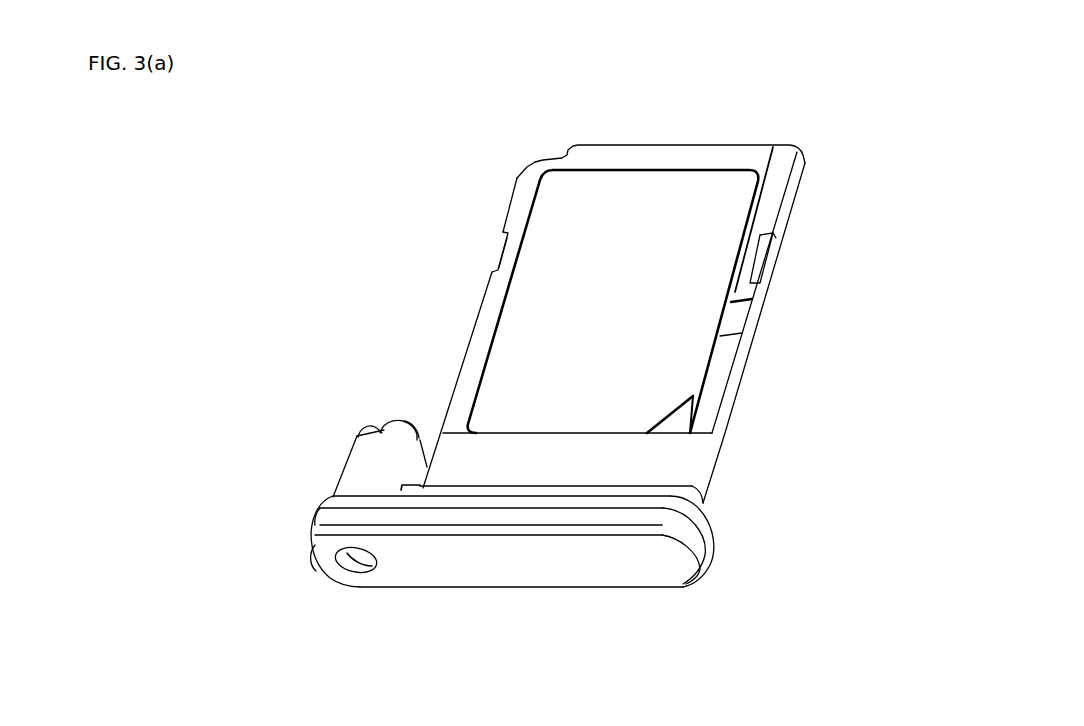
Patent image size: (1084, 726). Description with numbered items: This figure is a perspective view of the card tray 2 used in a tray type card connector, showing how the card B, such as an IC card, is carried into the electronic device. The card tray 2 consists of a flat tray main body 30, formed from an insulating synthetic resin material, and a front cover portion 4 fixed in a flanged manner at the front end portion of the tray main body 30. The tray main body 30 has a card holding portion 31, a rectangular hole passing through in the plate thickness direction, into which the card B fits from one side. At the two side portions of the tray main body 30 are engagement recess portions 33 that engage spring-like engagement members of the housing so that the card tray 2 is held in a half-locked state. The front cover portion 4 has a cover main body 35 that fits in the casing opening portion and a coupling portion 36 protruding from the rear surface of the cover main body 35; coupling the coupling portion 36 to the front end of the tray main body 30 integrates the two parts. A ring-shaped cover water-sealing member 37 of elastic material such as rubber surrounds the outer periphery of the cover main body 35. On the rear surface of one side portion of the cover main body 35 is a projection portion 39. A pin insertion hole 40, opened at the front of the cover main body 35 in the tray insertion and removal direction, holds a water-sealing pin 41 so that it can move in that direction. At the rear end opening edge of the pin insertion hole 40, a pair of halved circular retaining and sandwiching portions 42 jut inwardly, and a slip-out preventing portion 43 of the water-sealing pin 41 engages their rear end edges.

The card tray 2 is at (797, 205).
The front cover portion 4 is at (675, 576).
The tray main body 30 is at (517, 178).
The card holding portion 31 is at (500, 316).
The engagement recess portion 33 is at (500, 251).
The cover main body 35 is at (513, 583).
The coupling portion 36 is at (710, 495).
The cover water-sealing member 37 is at (717, 543).
The projection portion 39 is at (352, 438).
The pin insertion hole 40 is at (370, 572).
The water-sealing pin 41 is at (335, 573).
The retaining and sandwiching portion 42 is at (375, 428).
The slip-out preventing portion 43 is at (390, 423).
The card B is at (641, 204).